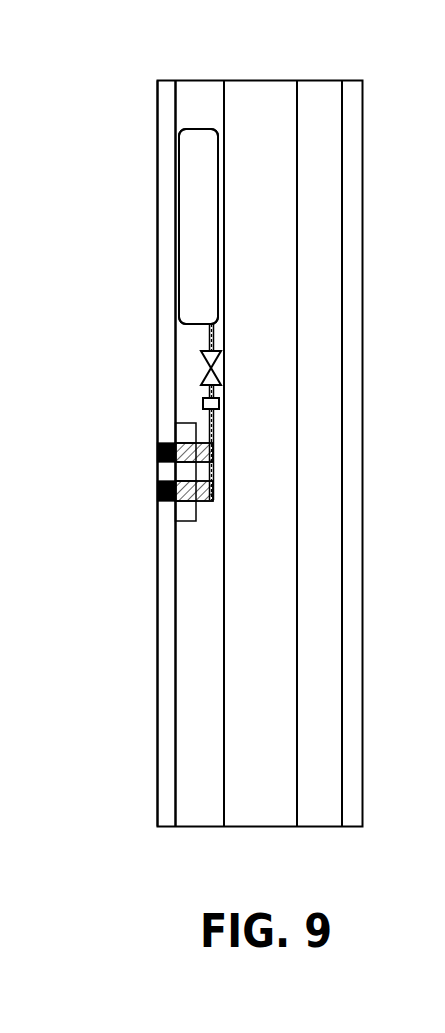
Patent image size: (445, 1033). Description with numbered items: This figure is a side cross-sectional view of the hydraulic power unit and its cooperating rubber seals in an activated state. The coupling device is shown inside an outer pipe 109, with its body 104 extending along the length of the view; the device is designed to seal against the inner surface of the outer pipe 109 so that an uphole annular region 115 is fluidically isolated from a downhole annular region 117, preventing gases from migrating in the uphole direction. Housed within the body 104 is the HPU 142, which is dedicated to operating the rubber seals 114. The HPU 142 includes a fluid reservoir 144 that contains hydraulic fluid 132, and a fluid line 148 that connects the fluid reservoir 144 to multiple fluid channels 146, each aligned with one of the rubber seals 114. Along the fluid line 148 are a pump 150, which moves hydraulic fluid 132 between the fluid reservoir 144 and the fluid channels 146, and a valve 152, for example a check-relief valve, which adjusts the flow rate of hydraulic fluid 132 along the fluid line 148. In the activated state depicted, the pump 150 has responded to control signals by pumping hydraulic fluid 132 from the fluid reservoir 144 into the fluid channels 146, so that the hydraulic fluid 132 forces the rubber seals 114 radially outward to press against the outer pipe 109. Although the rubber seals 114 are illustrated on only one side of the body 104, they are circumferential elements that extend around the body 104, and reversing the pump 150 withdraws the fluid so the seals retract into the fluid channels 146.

The body 104 is at (346, 661).
The outer pipe 109 is at (365, 116).
The rubber seals 114 is at (158, 456).
The uphole annular region 115 is at (165, 193).
The downhole annular region 117 is at (168, 730).
The hydraulic fluid 132 is at (195, 472).
The HPU 142 is at (173, 282).
The fluid reservoir 144 is at (199, 130).
The fluid channels 146 is at (213, 453).
The fluid line 148 is at (209, 349).
The pump 150 is at (224, 368).
The valve 152 is at (224, 403).